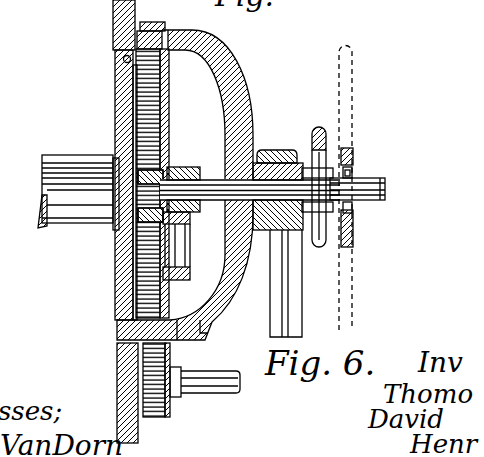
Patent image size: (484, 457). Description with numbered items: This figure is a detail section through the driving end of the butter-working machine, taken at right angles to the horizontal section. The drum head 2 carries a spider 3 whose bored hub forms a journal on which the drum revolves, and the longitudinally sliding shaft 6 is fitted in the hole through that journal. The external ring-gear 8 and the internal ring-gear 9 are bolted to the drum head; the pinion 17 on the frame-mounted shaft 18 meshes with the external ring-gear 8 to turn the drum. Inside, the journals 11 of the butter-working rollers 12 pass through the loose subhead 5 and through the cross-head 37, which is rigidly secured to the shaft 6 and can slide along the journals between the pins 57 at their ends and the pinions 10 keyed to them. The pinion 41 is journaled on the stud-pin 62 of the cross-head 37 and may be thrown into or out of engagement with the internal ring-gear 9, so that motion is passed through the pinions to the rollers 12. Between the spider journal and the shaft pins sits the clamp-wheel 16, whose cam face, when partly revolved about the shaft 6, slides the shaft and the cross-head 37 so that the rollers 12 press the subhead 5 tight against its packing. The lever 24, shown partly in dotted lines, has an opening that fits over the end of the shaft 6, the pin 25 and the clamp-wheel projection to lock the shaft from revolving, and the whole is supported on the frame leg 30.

The head of the drum 2 is at (117, 20).
The spider 3 is at (237, 78).
The loose subhead 5 is at (118, 118).
The shaft 6 is at (385, 190).
The external ring-gear 8 is at (162, 22).
The internal ring-gear 9 is at (170, 92).
The pinion 10 is at (118, 230).
The journal 11 is at (107, 198).
The butter-working roller 12 is at (58, 163).
The clamp-wheel 16 is at (328, 137).
The pinion 17 is at (158, 412).
The shaft 18 is at (223, 393).
The lever 24 is at (355, 158).
The pin 25 is at (355, 172).
The leg of the frame 30 is at (268, 312).
The cross-head 37 is at (185, 168).
The pinion 41 is at (135, 263).
The pin 57 is at (250, 192).
The stud-pin 62 is at (182, 268).